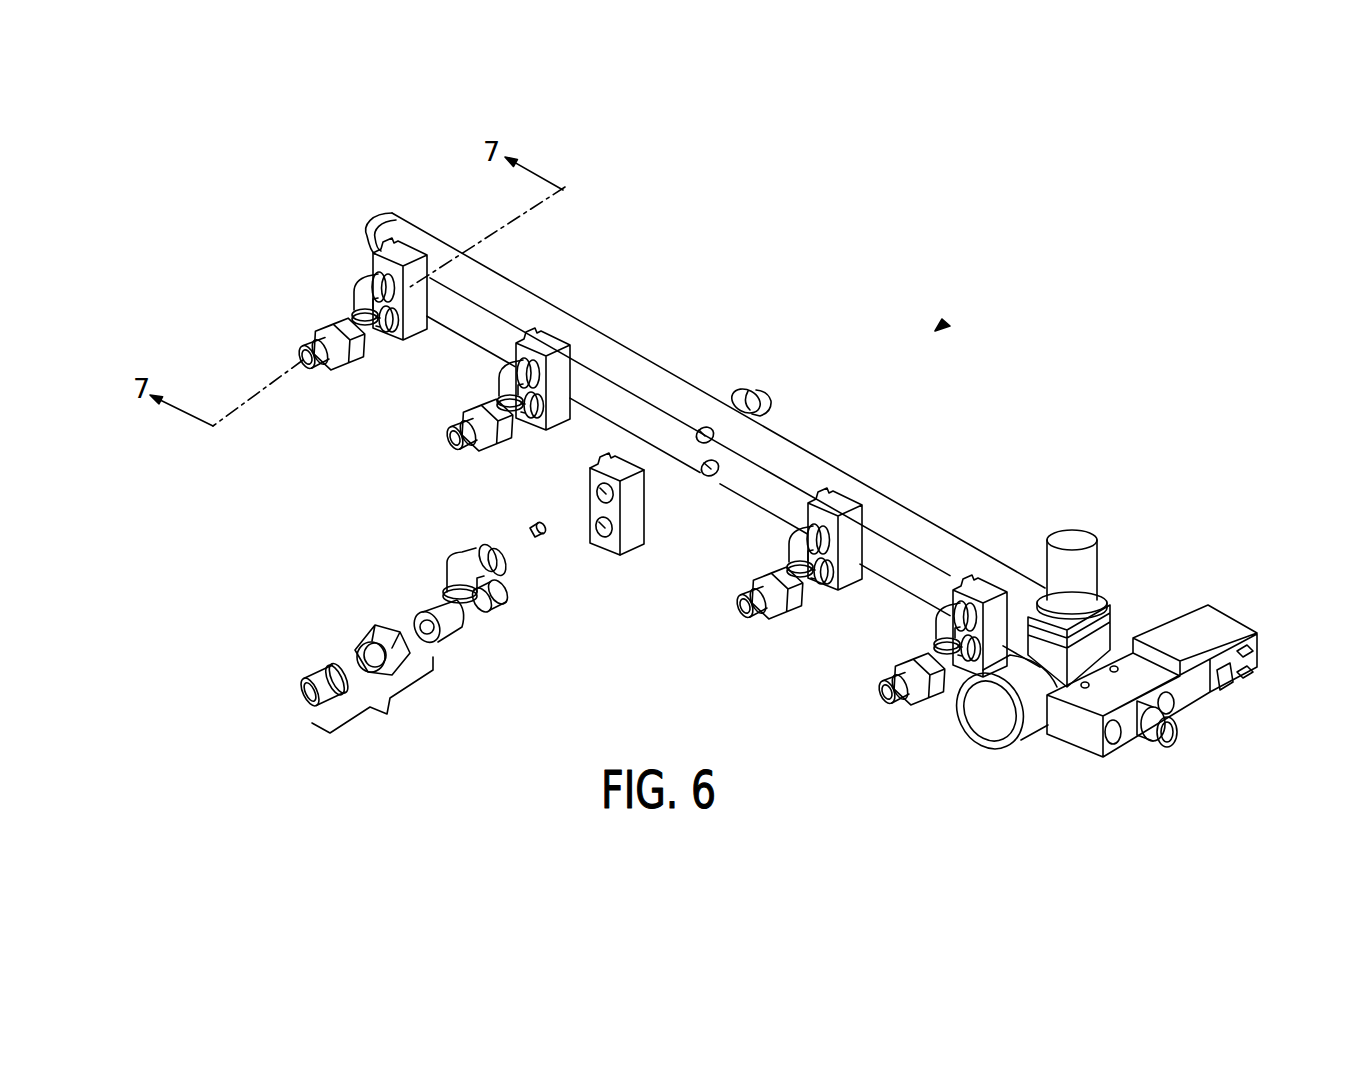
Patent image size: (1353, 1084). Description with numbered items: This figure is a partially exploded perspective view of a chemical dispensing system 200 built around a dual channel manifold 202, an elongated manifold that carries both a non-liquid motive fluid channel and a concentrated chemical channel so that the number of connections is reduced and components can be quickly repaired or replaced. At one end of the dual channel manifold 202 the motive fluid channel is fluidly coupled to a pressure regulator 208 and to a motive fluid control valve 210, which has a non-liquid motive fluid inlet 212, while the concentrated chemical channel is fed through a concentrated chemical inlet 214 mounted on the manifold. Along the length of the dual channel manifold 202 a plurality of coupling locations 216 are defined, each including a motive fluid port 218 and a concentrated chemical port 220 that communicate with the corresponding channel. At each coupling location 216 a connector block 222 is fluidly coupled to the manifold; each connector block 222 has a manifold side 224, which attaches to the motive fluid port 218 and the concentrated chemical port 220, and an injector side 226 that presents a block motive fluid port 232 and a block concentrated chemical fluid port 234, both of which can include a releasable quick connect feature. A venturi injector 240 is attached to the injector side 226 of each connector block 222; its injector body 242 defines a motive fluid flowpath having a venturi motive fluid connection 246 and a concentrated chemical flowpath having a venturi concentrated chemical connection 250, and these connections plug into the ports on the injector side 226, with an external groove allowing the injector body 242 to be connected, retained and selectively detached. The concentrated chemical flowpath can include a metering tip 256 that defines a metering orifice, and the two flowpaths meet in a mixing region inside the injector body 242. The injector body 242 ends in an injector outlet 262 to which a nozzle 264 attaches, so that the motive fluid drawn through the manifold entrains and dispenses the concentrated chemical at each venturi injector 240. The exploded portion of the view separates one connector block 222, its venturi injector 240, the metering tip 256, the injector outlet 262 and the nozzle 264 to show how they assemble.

The chemical dispensing system 200 is at (940, 326).
The dual channel manifold 202 is at (795, 479).
The pressure regulator 208 is at (1075, 540).
The motive fluid control valve 210 is at (1220, 625).
The non-liquid motive fluid inlet 212 is at (1177, 743).
The concentrated chemical inlet 214 is at (768, 394).
The coupling location 216 is at (697, 430).
The motive fluid port 218 is at (705, 475).
The concentrated chemical port 220 is at (703, 428).
The connector block 222 is at (690, 457).
The manifold side 224 is at (647, 537).
The injector side 226 is at (607, 541).
The block motive fluid port 232 is at (590, 527).
The block concentrated chemical fluid port 234 is at (593, 493).
The venturi injector 240 is at (360, 292).
The injector body 242 is at (453, 568).
The venturi motive fluid connection 246 is at (493, 600).
The venturi concentrated chemical connection 250 is at (507, 552).
The metering tip 256 is at (527, 523).
The injector outlet 262 is at (437, 642).
The nozzle 264 is at (302, 355).